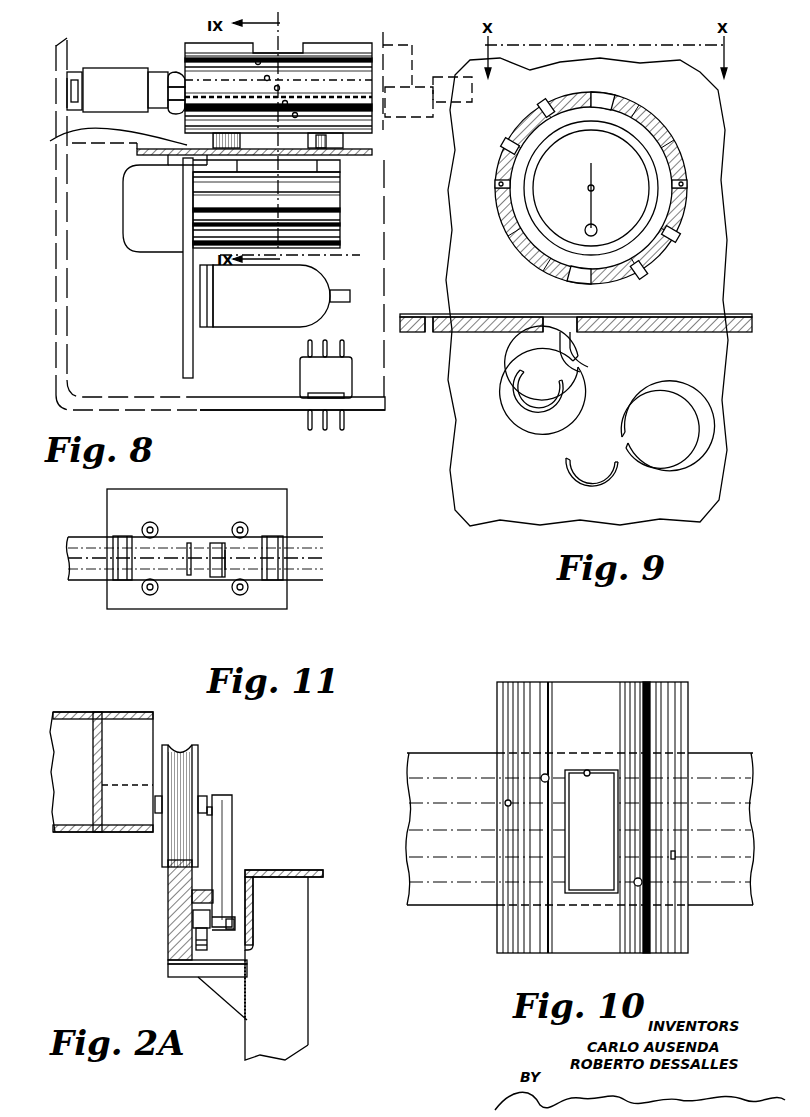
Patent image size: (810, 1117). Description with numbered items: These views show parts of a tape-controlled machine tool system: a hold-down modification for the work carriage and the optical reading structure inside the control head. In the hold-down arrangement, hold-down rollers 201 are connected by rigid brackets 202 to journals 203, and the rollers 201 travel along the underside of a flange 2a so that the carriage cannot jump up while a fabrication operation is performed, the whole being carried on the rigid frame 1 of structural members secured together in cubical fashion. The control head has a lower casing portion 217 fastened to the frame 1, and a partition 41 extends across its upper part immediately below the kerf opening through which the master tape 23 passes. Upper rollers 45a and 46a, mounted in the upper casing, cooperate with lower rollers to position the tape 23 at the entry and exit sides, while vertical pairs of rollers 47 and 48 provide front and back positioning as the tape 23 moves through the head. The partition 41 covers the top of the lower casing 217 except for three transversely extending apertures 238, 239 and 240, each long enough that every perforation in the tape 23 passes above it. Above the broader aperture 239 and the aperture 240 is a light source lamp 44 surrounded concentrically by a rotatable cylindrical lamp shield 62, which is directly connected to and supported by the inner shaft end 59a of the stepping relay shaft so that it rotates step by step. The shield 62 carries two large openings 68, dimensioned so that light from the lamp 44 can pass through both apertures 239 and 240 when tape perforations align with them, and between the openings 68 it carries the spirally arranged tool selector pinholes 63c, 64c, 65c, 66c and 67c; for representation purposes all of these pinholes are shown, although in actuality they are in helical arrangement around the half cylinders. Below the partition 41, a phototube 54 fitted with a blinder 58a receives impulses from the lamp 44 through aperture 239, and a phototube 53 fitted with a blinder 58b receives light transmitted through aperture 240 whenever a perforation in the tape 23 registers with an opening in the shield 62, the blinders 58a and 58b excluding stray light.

In FIG. 2A, the rigid frame 1 is at (288, 1020).
In FIG. 2A, the flange 2a is at (185, 897).
In FIG. 8, the master tape 23 is at (290, 146).
In FIG. 9, the master tape 23 is at (602, 292).
In FIG. 11, the master tape 23 is at (323, 549).
In FIG. 10, the master tape 23 is at (467, 905).
In FIG. 8, the partition 41 is at (372, 152).
In FIG. 9, the partition 41 is at (740, 333).
In FIG. 11, the partition 41 is at (285, 600).
In FIG. 8, the light source lamp 44 is at (178, 66).
In FIG. 9, the light source lamp 44 is at (653, 210).
In FIG. 11, the upper roller 45a is at (113, 540).
In FIG. 11, the upper roller 46a is at (283, 540).
In FIG. 8, the vertical pair of rollers 47 is at (403, 138).
In FIG. 11, the vertical pair of rollers 47 is at (151, 522).
In FIG. 11, the vertical pair of rollers 48 is at (241, 522).
In FIG. 9, the phototube 53 is at (622, 450).
In FIG. 9, the phototube 54 is at (522, 360).
In FIG. 9, the blinder 58a is at (518, 418).
In FIG. 9, the blinder 58b is at (628, 487).
In FIG. 8, the inner end of shaft 59a is at (446, 78).
In FIG. 8, the lamp shield 62 is at (327, 45).
In FIG. 9, the lamp shield 62 is at (685, 153).
In FIG. 10, the lamp shield 62 is at (652, 682).
In FIG. 8, the tool selector pinhole 63c is at (297, 114).
In FIG. 9, the tool selector pinhole 63c is at (547, 104).
In FIG. 10, the tool selector pinhole 63c is at (542, 776).
In FIG. 8, the tool selector pinhole 64c is at (287, 102).
In FIG. 9, the tool selector pinhole 64c is at (510, 140).
In FIG. 10, the tool selector pinhole 64c is at (506, 801).
In FIG. 8, the tool selector pinhole 65c is at (279, 87).
In FIG. 9, the tool selector pinhole 65c is at (497, 187).
In FIG. 10, the tool selector pinhole 65c is at (497, 831).
In FIG. 8, the tool selector pinhole 66c is at (268, 76).
In FIG. 9, the tool selector pinhole 66c is at (683, 133).
In FIG. 10, the tool selector pinhole 66c is at (676, 856).
In FIG. 8, the tool selector pinhole 67c is at (258, 60).
In FIG. 9, the tool selector pinhole 67c is at (637, 107).
In FIG. 10, the tool selector pinhole 67c is at (641, 885).
In FIG. 9, the opening 68 is at (603, 93).
In FIG. 10, the opening 68 is at (587, 769).
In FIG. 2A, the hold-down roller 201 is at (210, 945).
In FIG. 2A, the rigid bracket 202 is at (225, 853).
In FIG. 2A, the journal 203 is at (212, 798).
In FIG. 8, the lower casing portion 217 is at (243, 408).
In FIG. 9, the aperture 238 is at (431, 333).
In FIG. 11, the aperture 238 is at (189, 575).
In FIG. 9, the aperture 239 is at (563, 313).
In FIG. 11, the aperture 239 is at (212, 543).
In FIG. 9, the aperture 240 is at (590, 333).
In FIG. 11, the aperture 240 is at (228, 548).